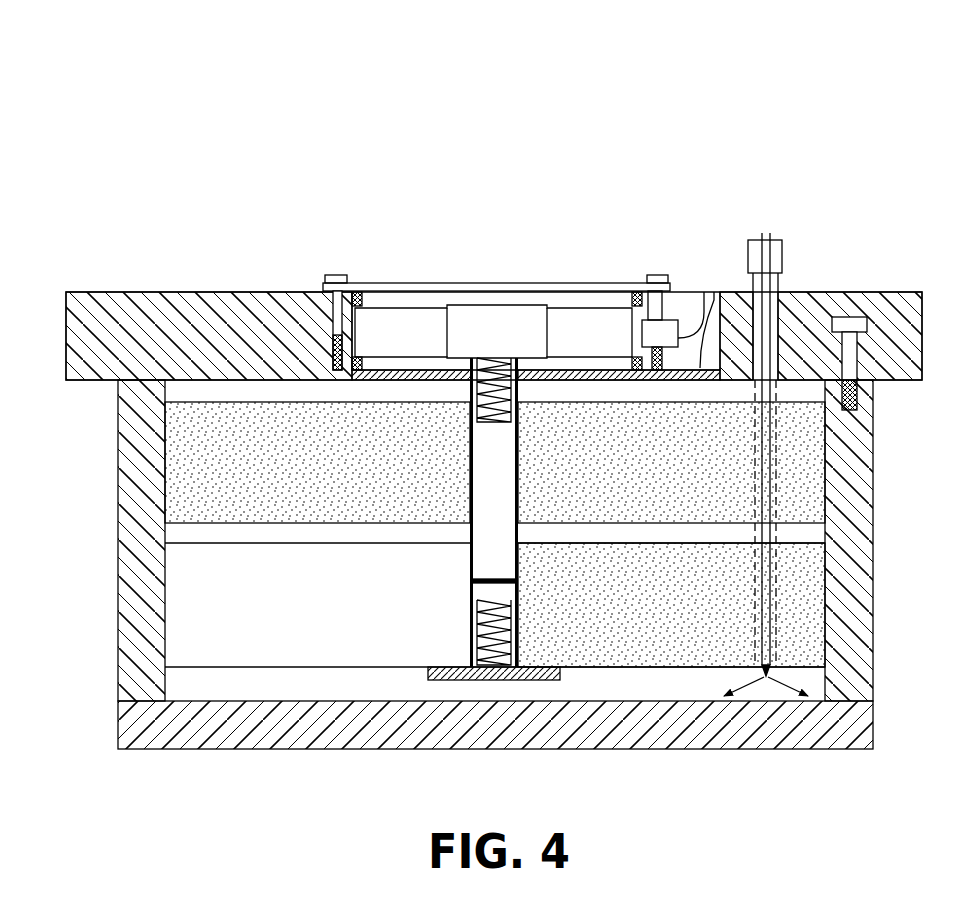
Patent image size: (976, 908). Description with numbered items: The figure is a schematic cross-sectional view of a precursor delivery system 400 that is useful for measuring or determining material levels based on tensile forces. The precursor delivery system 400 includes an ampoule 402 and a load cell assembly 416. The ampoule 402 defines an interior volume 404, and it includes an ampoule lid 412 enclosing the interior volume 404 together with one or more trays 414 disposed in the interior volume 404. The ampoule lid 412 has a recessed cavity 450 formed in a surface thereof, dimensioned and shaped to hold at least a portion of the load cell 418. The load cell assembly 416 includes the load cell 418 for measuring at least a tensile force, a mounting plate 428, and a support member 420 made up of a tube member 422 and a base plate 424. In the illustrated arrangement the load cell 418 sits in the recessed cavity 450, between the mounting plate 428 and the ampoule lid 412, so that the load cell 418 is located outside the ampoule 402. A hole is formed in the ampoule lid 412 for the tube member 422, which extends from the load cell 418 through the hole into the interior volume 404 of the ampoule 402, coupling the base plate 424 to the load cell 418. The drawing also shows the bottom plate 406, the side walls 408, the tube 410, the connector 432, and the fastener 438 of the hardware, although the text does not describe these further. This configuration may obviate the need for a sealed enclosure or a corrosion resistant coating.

The precursor delivery system 400 is at (658, 84).
The ampoule 402 is at (176, 170).
The interior volume 404 is at (223, 696).
The bottom plate 406 is at (800, 750).
The side walls 408 is at (850, 466).
The fluid tube 410 is at (780, 281).
The ampoule lid 412 is at (876, 299).
The trays 414 is at (335, 473).
The load cell assembly 416 is at (266, 223).
The load cell 418 is at (410, 325).
The support member 420 is at (526, 537).
The tube member 422 is at (482, 586).
The base plate 424 is at (497, 681).
The mounting plate 428 is at (380, 281).
The connector 432 is at (668, 320).
The fastener 438 is at (362, 283).
The recessed cavity 450 is at (706, 292).